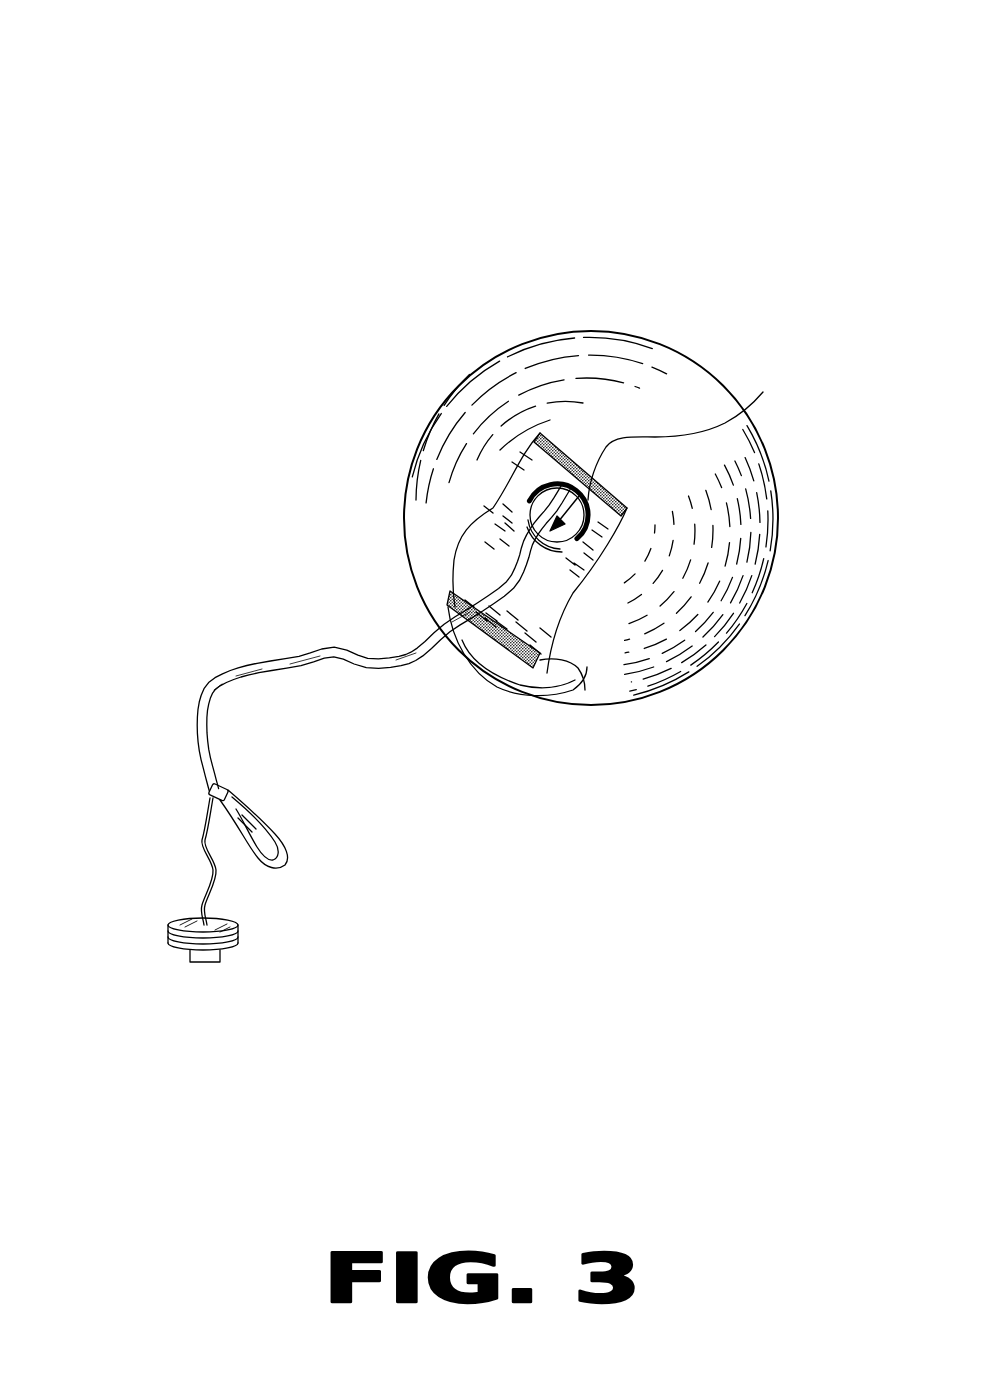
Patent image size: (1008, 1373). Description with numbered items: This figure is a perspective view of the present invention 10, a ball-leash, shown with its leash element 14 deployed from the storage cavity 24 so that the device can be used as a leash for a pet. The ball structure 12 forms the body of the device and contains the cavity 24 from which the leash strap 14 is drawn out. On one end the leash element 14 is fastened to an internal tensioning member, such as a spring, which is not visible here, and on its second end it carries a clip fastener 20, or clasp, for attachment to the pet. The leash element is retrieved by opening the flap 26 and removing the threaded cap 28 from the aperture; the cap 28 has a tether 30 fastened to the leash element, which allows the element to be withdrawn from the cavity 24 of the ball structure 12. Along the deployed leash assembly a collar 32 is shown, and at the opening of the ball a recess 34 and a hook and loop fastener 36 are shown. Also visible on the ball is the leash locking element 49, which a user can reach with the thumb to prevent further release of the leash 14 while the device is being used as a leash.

The present invention 10 is at (390, 145).
The ball structure 12 is at (524, 372).
The leash element 14 is at (360, 652).
The clip fastener 20 is at (273, 827).
The storage cavity 24 is at (540, 497).
The flap 26 is at (470, 660).
The threaded cap 28 is at (236, 930).
The tether 30 is at (203, 870).
The collar 32 is at (210, 788).
The recess 34 is at (514, 468).
The hook and loop fastener 36 is at (622, 505).
The leash locking element 49 is at (698, 426).